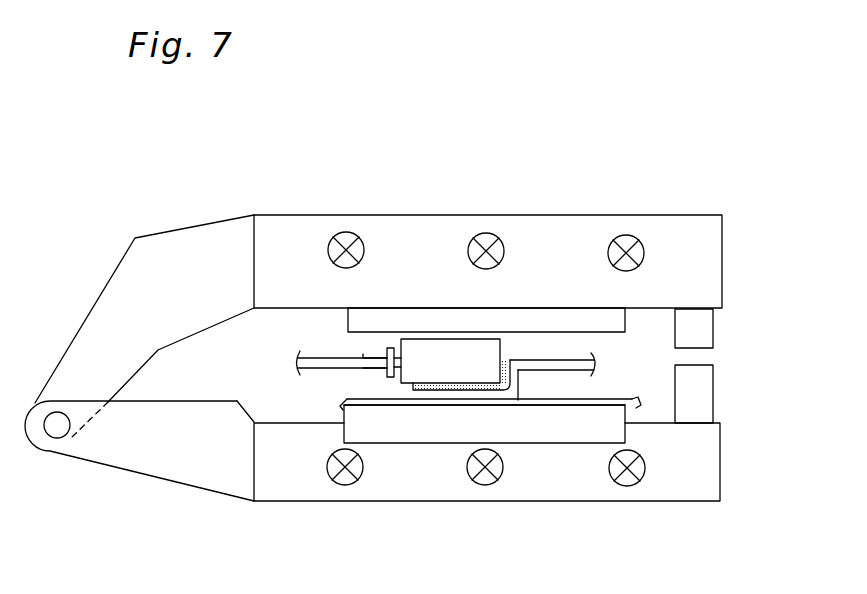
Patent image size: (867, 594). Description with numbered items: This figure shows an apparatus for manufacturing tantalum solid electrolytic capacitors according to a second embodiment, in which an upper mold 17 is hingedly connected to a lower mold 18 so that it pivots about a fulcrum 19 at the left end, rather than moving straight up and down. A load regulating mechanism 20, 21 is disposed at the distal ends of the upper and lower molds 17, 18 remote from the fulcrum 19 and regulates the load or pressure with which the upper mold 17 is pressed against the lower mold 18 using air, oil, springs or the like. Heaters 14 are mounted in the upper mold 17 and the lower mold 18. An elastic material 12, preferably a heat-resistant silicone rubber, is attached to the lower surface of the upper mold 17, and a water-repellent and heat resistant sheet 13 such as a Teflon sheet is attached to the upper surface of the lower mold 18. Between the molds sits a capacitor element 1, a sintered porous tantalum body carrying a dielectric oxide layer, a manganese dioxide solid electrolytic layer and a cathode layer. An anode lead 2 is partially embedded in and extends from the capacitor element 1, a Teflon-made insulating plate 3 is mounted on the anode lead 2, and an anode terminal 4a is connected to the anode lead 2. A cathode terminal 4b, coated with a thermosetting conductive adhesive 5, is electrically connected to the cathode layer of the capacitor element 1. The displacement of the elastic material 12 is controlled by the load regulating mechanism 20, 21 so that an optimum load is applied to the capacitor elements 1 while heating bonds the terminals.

The capacitor element 1 is at (440, 345).
The anode lead 2 is at (367, 356).
The insulating plate 3 is at (392, 377).
The anode terminal 4a is at (307, 356).
The cathode terminal 4b is at (538, 367).
The thermosetting conductive adhesive 5 is at (508, 353).
The elastic material 12 is at (565, 317).
The water-repellent and heat resistant sheet 13 is at (632, 408).
The heaters 14 is at (340, 232).
The upper mold 17 is at (587, 240).
The lower mold 18 is at (510, 425).
The fulcrum 19 is at (57, 438).
The load regulating mechanism 20 is at (697, 330).
The load regulating mechanism 21 is at (693, 387).